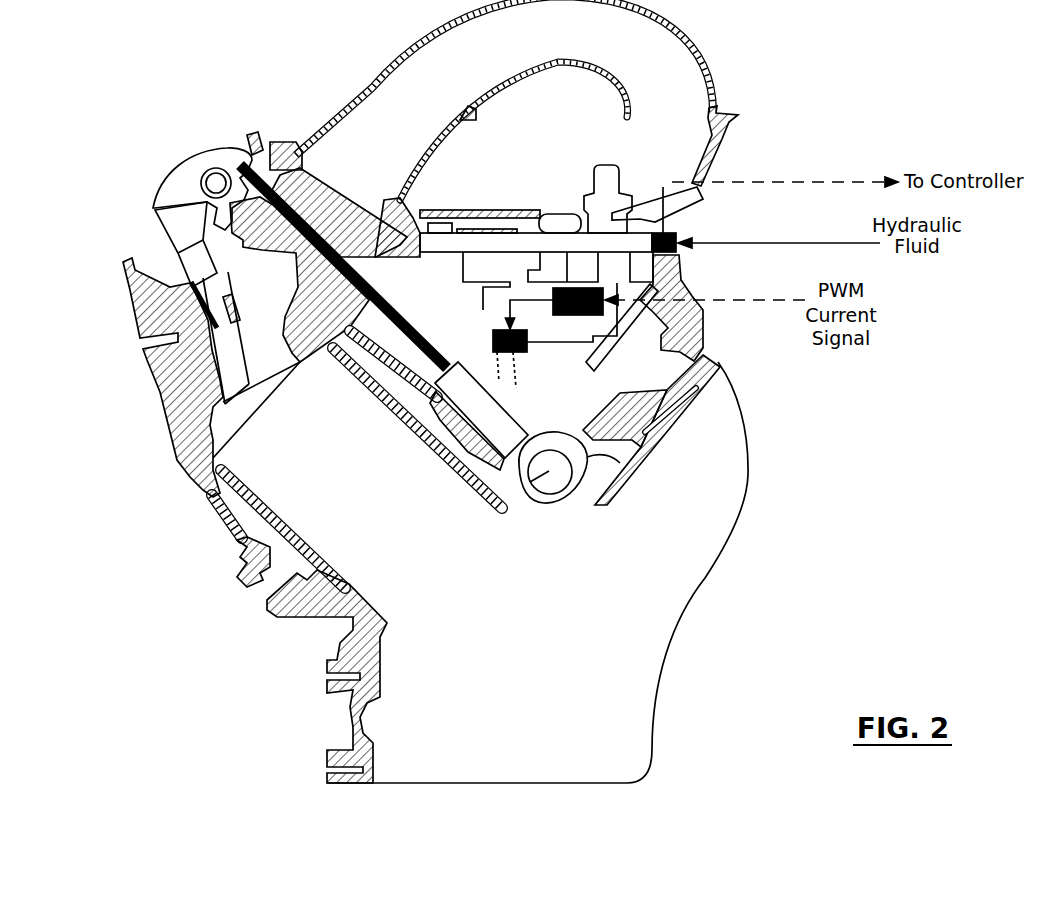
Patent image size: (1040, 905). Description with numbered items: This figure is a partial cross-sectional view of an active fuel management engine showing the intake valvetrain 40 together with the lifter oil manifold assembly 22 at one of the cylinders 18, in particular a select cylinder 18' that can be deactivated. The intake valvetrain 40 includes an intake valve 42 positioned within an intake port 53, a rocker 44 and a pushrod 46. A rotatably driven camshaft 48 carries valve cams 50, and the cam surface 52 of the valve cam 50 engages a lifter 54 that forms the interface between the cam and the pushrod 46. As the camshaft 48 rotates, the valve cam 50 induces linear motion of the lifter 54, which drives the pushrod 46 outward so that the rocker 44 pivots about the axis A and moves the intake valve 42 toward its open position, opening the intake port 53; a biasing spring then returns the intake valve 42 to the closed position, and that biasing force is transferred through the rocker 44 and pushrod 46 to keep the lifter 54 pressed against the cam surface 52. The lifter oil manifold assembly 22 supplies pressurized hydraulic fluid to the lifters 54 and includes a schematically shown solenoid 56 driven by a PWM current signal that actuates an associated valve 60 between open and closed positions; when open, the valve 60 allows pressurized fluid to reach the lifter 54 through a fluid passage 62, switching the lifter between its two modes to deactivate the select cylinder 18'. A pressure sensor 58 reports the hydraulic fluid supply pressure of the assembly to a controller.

The cylinder 18 is at (548, 391).
The select cylinder 18' is at (273, 572).
The lifter oil manifold assembly (LOMA) 22 is at (574, 200).
The intake valvetrain 40 is at (222, 108).
The intake valve 42 is at (162, 236).
The rocker 44 is at (158, 196).
The axis A is at (216, 180).
The pushrod 46 is at (420, 357).
The camshaft 48 is at (535, 482).
The valve cam 50 is at (573, 488).
The cam surface 52 is at (590, 456).
The intake port 53 is at (218, 399).
The lifter 54 is at (483, 415).
The solenoid 56 is at (583, 316).
The pressure sensor 58 is at (650, 229).
The valve 60 is at (492, 331).
The fluid passage 62 is at (493, 375).